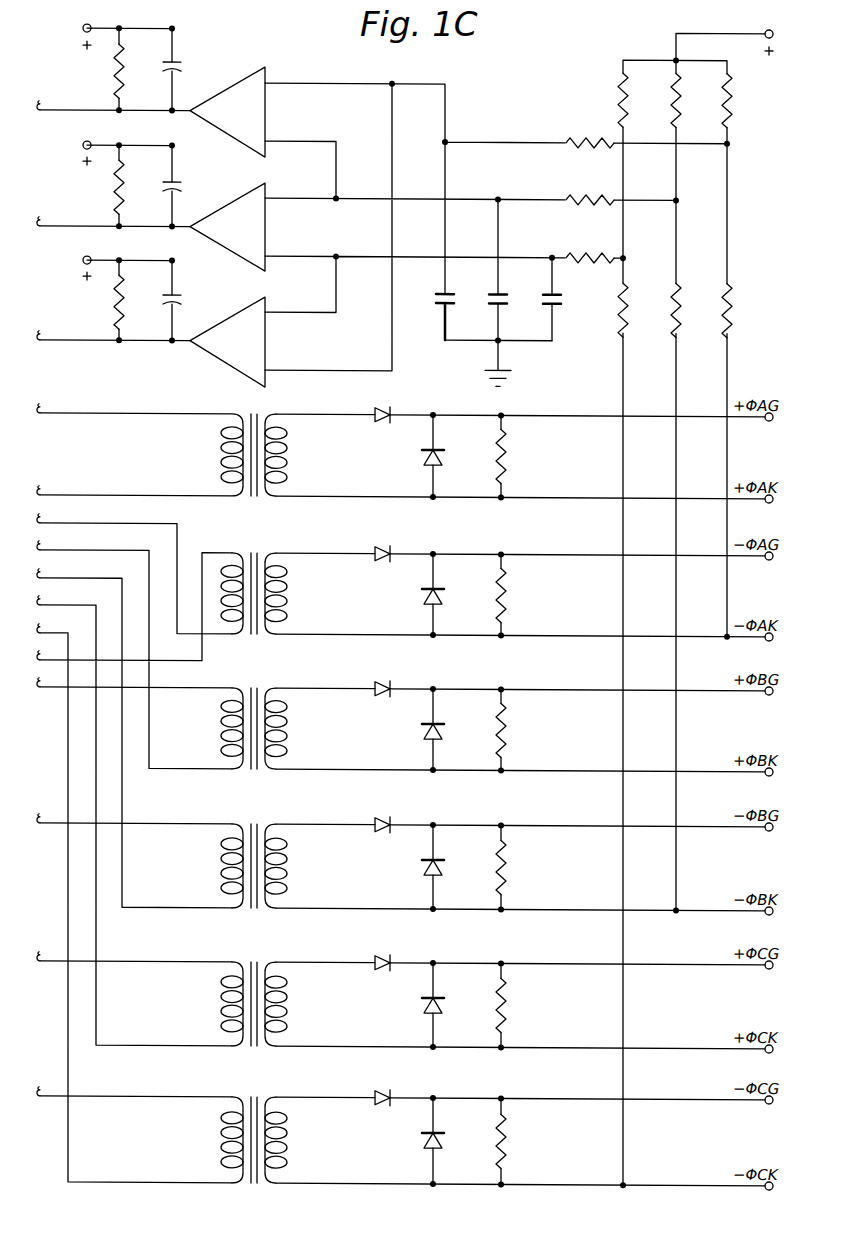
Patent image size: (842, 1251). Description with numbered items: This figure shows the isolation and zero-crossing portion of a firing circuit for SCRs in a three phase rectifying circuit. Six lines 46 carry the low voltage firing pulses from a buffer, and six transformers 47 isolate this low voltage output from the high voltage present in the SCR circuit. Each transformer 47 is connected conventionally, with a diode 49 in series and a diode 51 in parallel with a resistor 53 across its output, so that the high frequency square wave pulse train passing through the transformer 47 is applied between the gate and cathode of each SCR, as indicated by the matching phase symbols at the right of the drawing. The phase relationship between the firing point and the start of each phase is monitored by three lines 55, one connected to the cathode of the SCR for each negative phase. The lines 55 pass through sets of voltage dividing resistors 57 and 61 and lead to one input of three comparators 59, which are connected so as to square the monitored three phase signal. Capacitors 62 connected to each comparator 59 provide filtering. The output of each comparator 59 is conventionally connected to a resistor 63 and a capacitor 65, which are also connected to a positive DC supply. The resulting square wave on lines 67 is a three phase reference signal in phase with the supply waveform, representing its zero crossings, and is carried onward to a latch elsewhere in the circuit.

The lines 46 is at (157, 524).
The transformer 47 is at (222, 455).
The diode 49 is at (390, 413).
The diode 51 is at (428, 451).
The resistor 53 is at (505, 478).
The line 55 is at (728, 370).
The voltage dividing resistor 57 is at (735, 302).
The comparator 59 is at (230, 88).
The voltage dividing resistor 61 is at (735, 103).
The capacitor 62 is at (552, 318).
The resistor 63 is at (115, 72).
The capacitor 65 is at (175, 62).
The line 67 is at (50, 113).